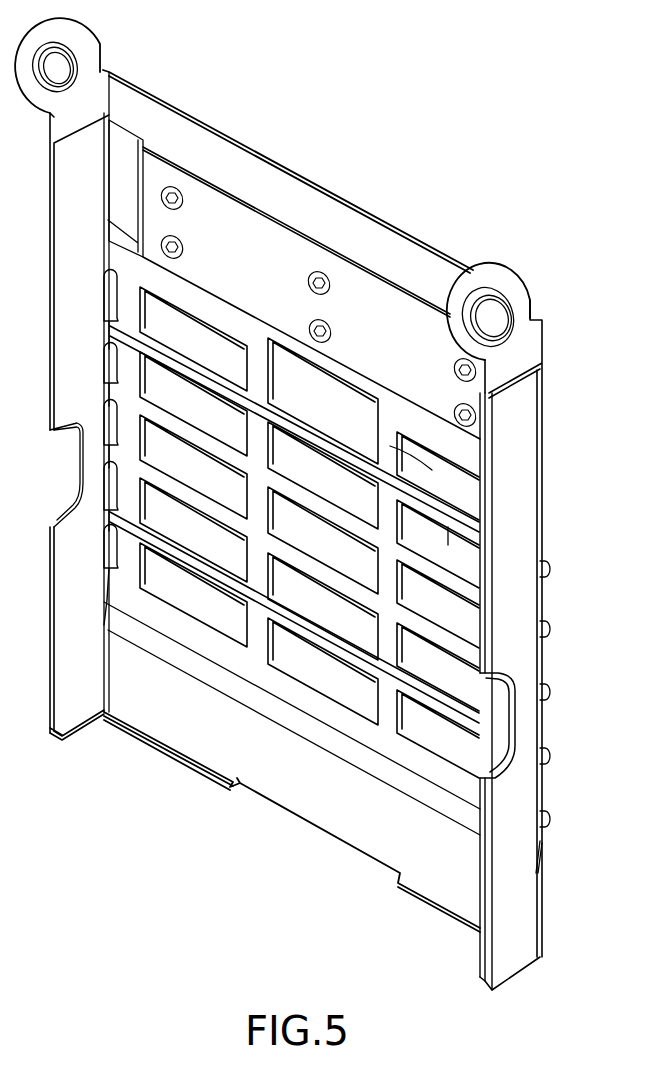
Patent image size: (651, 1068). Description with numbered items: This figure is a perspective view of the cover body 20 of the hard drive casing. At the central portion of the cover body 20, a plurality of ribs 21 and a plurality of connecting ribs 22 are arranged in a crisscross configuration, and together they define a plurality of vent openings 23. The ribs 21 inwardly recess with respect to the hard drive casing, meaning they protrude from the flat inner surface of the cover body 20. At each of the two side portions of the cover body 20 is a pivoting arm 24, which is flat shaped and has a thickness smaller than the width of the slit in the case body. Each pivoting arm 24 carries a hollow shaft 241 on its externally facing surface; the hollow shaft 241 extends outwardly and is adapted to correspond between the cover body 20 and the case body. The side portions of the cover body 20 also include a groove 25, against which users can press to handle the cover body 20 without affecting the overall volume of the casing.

The cover body 20 is at (376, 139).
The rib 21 is at (448, 527).
The connecting rib 22 is at (387, 450).
The vent opening 23 is at (457, 613).
The pivoting arm 24 is at (517, 277).
The hollow shaft 241 is at (513, 302).
The groove 25 is at (517, 720).